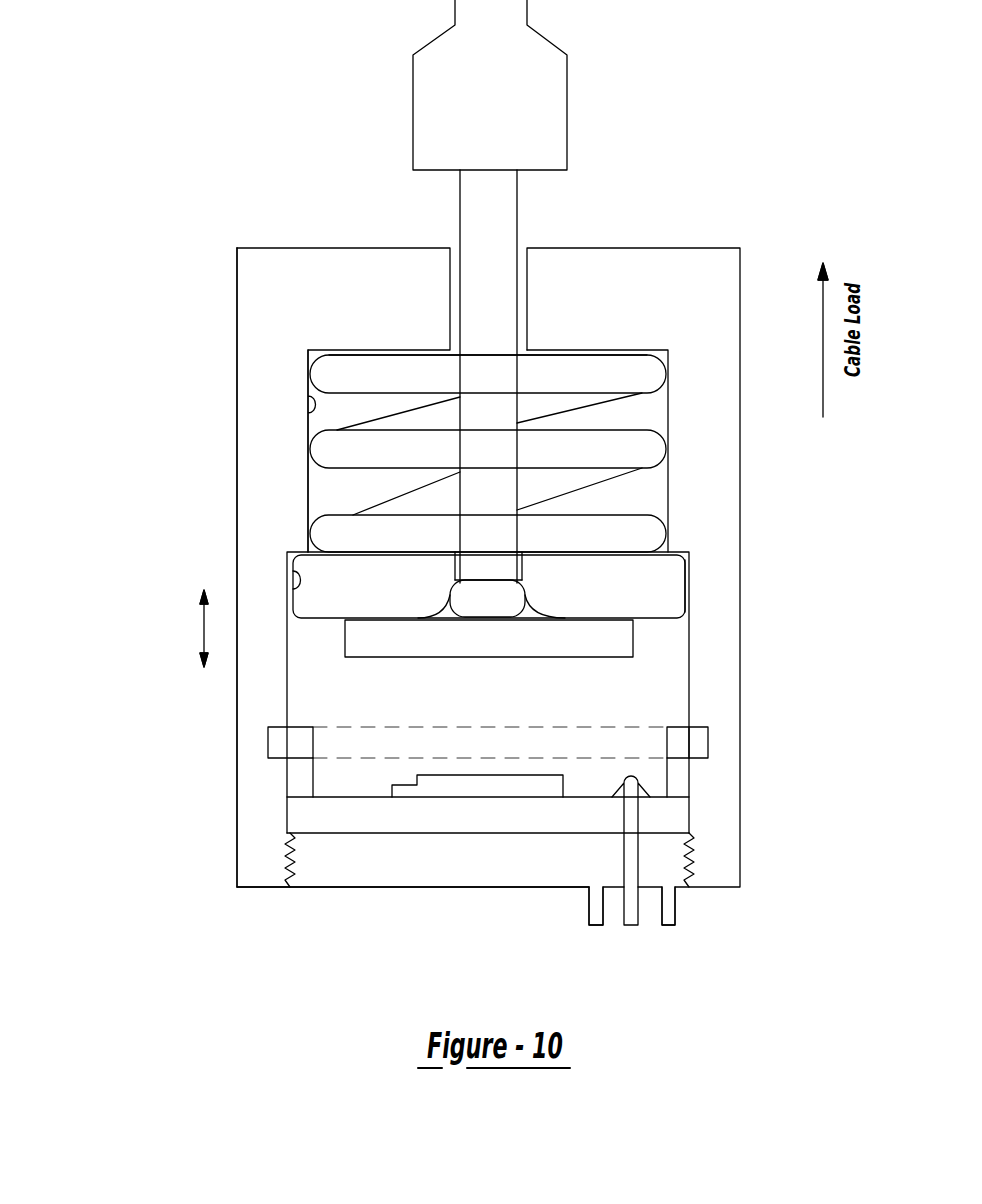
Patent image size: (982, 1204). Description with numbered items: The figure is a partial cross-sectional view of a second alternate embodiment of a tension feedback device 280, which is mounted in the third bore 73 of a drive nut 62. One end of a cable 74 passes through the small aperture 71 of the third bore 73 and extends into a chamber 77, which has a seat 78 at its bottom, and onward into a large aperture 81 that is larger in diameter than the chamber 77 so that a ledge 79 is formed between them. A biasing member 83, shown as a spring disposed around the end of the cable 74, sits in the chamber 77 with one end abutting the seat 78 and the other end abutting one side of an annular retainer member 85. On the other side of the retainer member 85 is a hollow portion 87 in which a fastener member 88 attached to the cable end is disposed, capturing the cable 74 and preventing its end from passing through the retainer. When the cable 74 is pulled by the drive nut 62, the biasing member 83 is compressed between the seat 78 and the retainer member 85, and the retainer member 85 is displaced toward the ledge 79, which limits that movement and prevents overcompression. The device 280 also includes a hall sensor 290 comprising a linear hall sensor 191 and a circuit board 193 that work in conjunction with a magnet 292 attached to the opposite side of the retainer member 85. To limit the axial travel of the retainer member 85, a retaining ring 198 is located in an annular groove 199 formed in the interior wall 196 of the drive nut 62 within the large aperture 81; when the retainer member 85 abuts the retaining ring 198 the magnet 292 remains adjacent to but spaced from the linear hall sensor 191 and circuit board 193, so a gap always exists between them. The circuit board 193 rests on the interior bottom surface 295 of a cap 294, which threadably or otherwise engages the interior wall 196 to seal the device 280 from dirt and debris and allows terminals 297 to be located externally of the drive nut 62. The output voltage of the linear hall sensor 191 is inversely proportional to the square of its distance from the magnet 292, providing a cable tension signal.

The tension feedback device 280 is at (173, 173).
The cable 74 is at (455, 188).
The small aperture 71 is at (452, 277).
The drive nut 62 is at (257, 260).
The seat 78 is at (357, 350).
The biasing member 83 is at (312, 368).
The chamber 77 is at (300, 413).
The fastener member 88 is at (468, 588).
The hollow portion 87 is at (547, 602).
The ledge 79 is at (293, 555).
The third bore 73 is at (293, 580).
The retainer member 85 is at (685, 577).
The magnet 292 is at (633, 647).
The interior wall 196 is at (688, 688).
The large aperture 81 is at (288, 658).
The retaining ring 198 is at (695, 727).
The annular groove 199 is at (710, 745).
The hall sensor 290 is at (188, 817).
The interior bottom surface 295 is at (348, 833).
The cap 294 is at (382, 870).
The circuit board 193 is at (447, 825).
The linear hall sensor 191 is at (543, 792).
The terminals 297 is at (630, 925).